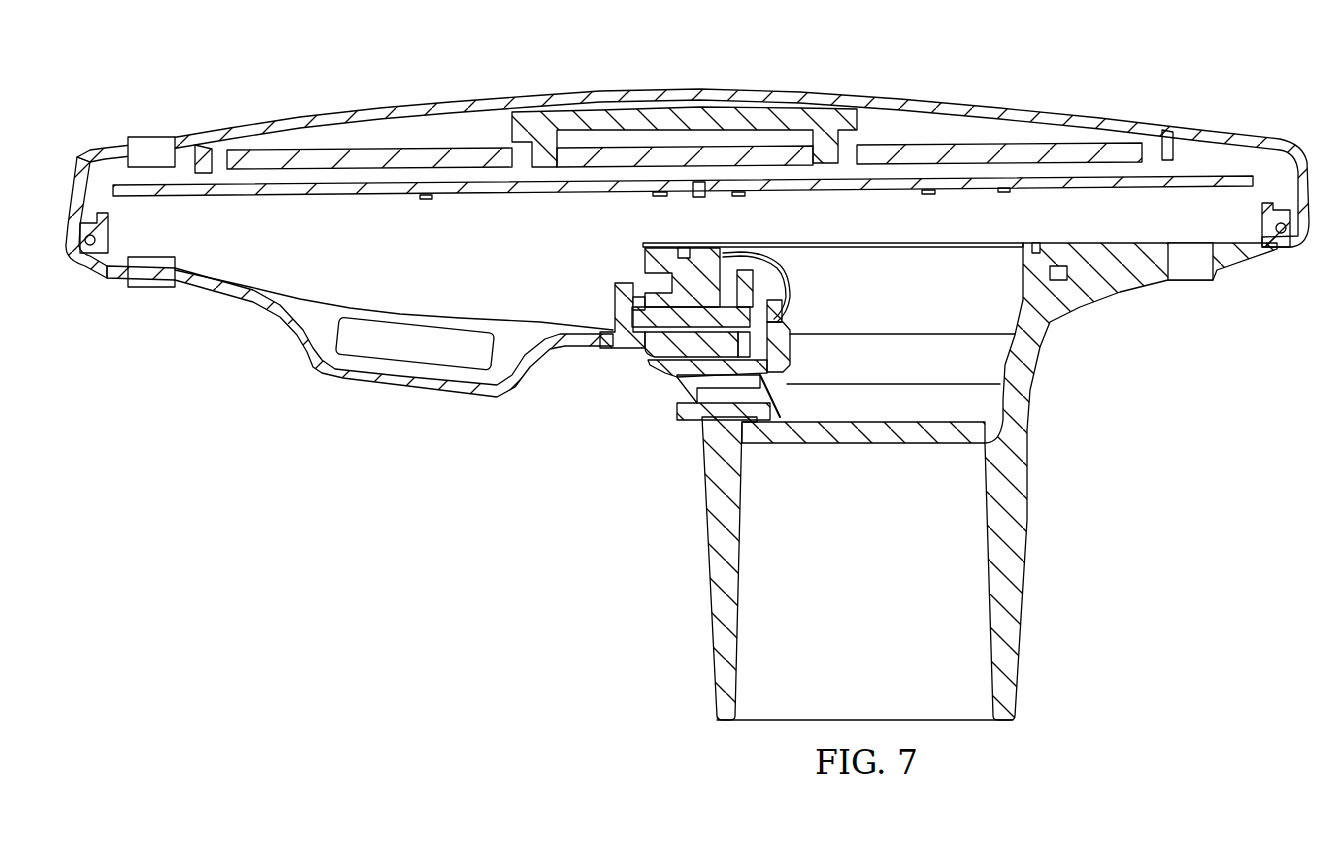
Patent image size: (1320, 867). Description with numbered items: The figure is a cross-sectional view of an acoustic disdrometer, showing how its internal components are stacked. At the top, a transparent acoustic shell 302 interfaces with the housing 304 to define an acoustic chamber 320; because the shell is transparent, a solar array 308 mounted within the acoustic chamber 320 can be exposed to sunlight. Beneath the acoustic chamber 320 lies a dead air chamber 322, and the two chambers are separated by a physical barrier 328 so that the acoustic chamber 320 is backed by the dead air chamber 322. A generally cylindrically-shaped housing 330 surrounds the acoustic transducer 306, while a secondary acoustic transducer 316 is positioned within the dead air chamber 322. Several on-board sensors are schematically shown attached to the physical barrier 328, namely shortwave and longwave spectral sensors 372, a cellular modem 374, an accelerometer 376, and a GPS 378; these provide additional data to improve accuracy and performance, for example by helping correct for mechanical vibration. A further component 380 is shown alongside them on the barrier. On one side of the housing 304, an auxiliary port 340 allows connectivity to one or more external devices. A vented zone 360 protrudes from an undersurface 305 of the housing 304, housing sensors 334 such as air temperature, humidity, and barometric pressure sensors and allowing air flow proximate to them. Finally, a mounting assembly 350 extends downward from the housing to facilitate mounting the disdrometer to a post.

The acoustic shell 302 is at (693, 192).
The housing 304 is at (1131, 481).
The undersurface 305 is at (606, 346).
The acoustic transducer 306 is at (699, 182).
The solar array 308 is at (322, 148).
The secondary acoustic transducer 316 is at (660, 197).
The acoustic chamber 320 is at (428, 120).
The dead air chamber 322 is at (678, 305).
The physical barrier 328 is at (1155, 186).
The housing 330 is at (522, 130).
The sensors 334 is at (497, 357).
The auxiliary port 340 is at (1190, 295).
The mounting assembly 350 is at (1046, 576).
The vented zone 360 is at (374, 397).
The shortwave and longwave spectral sensors 372 is at (148, 136).
The cellular modem 374 is at (426, 200).
The accelerometer 376 is at (740, 197).
The GPS 378 is at (930, 195).
The standoff 380 is at (1005, 193).